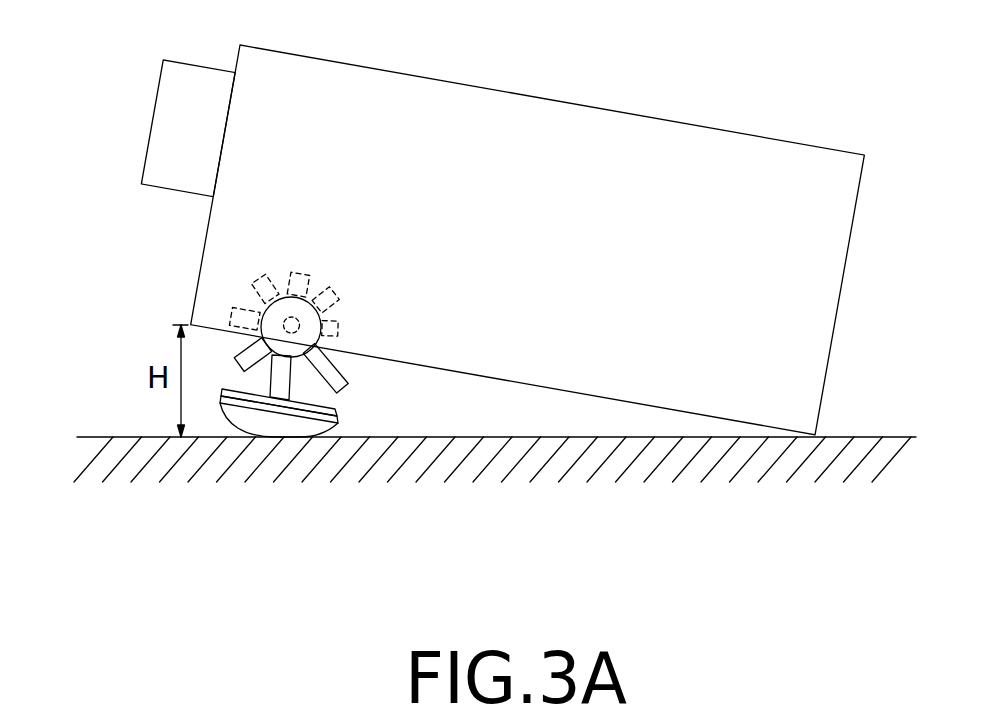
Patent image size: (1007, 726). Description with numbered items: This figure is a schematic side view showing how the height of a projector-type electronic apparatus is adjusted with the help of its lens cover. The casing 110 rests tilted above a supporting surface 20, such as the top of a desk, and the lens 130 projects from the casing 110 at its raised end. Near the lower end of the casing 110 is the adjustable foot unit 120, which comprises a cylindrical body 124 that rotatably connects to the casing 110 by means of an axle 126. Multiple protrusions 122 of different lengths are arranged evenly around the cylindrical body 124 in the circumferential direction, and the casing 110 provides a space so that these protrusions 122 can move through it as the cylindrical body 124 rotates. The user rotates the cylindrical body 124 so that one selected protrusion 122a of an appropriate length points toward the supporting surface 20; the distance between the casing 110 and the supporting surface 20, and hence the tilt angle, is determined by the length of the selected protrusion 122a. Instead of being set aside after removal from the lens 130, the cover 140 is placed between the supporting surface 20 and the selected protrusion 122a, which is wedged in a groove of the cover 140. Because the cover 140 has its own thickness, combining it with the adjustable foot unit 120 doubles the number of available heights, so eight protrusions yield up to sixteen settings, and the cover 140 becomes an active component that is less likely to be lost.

The casing 110 is at (817, 270).
The lens 130 is at (163, 125).
The adjustable foot unit 120 is at (233, 318).
The protrusions 122 is at (240, 322).
The selected protrusion 122a is at (235, 381).
The cylindrical body 124 is at (332, 327).
The axle 126 is at (295, 319).
The cover 140 is at (255, 437).
The supporting surface 20 is at (113, 458).